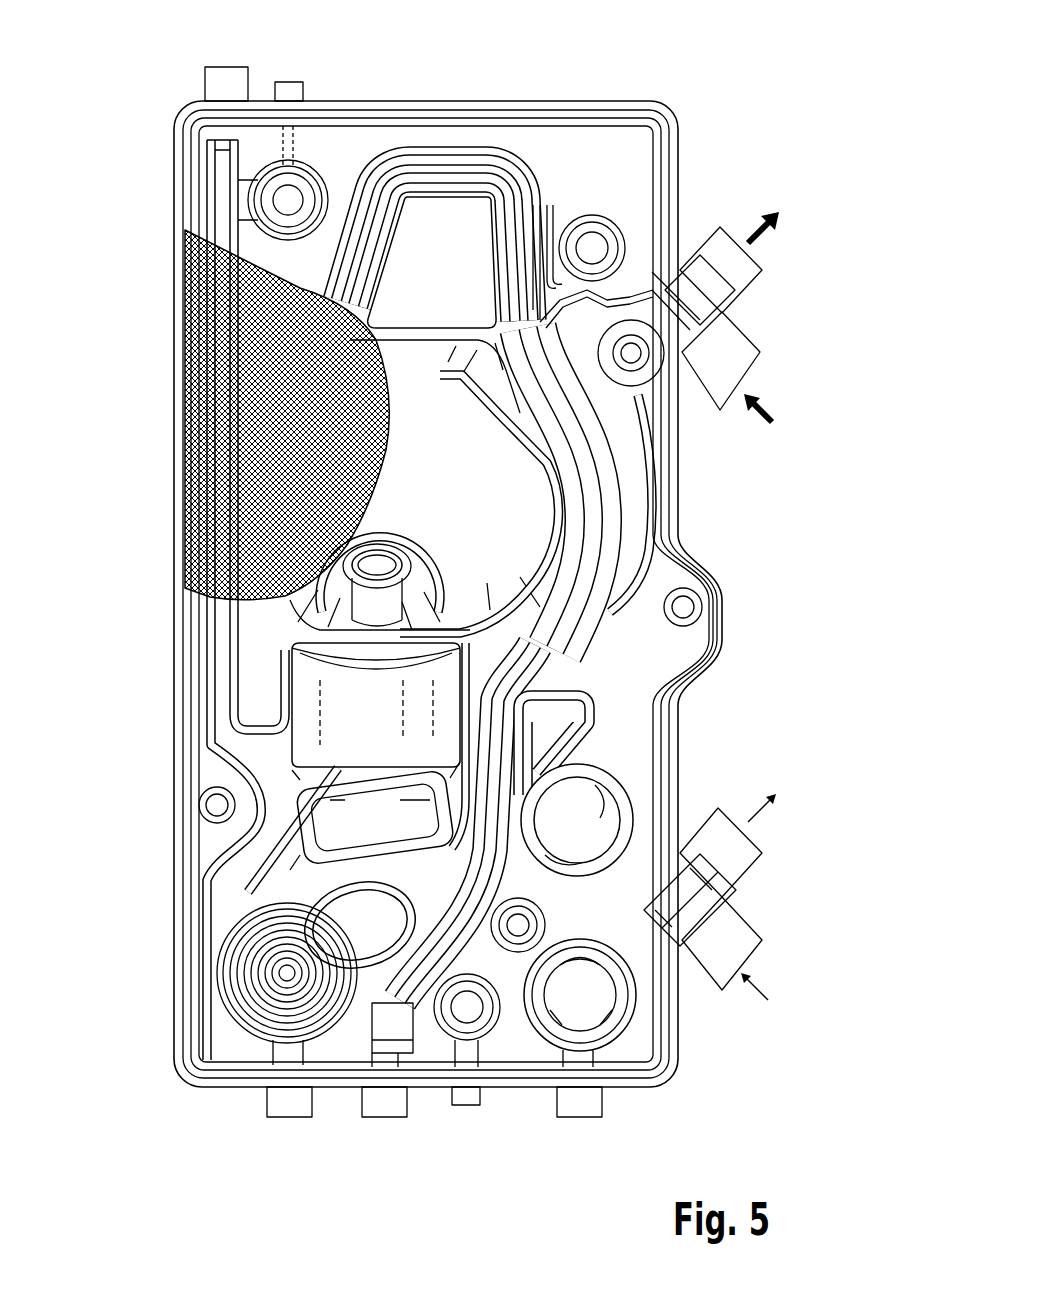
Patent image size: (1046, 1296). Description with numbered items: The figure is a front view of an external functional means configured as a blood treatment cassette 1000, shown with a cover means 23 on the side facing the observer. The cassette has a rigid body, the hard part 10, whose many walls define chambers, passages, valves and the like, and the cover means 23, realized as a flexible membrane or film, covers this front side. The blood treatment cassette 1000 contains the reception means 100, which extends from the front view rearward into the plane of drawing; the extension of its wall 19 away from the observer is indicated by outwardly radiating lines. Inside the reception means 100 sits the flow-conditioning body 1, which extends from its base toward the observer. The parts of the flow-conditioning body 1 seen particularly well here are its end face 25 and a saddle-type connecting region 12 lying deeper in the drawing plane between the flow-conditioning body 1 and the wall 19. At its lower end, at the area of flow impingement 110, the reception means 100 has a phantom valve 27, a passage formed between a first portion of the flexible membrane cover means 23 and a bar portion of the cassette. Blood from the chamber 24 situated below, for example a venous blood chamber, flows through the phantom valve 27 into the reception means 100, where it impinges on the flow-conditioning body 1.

The blood treatment cassette 1000 is at (454, 599).
The hard part 10 is at (545, 102).
The wall 19 is at (510, 418).
The reception means 100 is at (388, 432).
The cover means 23 is at (268, 503).
The flow-conditioning body 1 is at (413, 583).
The end face 25 is at (377, 566).
The saddle-type connecting region 12 is at (377, 611).
The chamber 24 is at (343, 687).
The area of flow impingement 110 is at (455, 618).
The phantom valve 27 is at (378, 638).